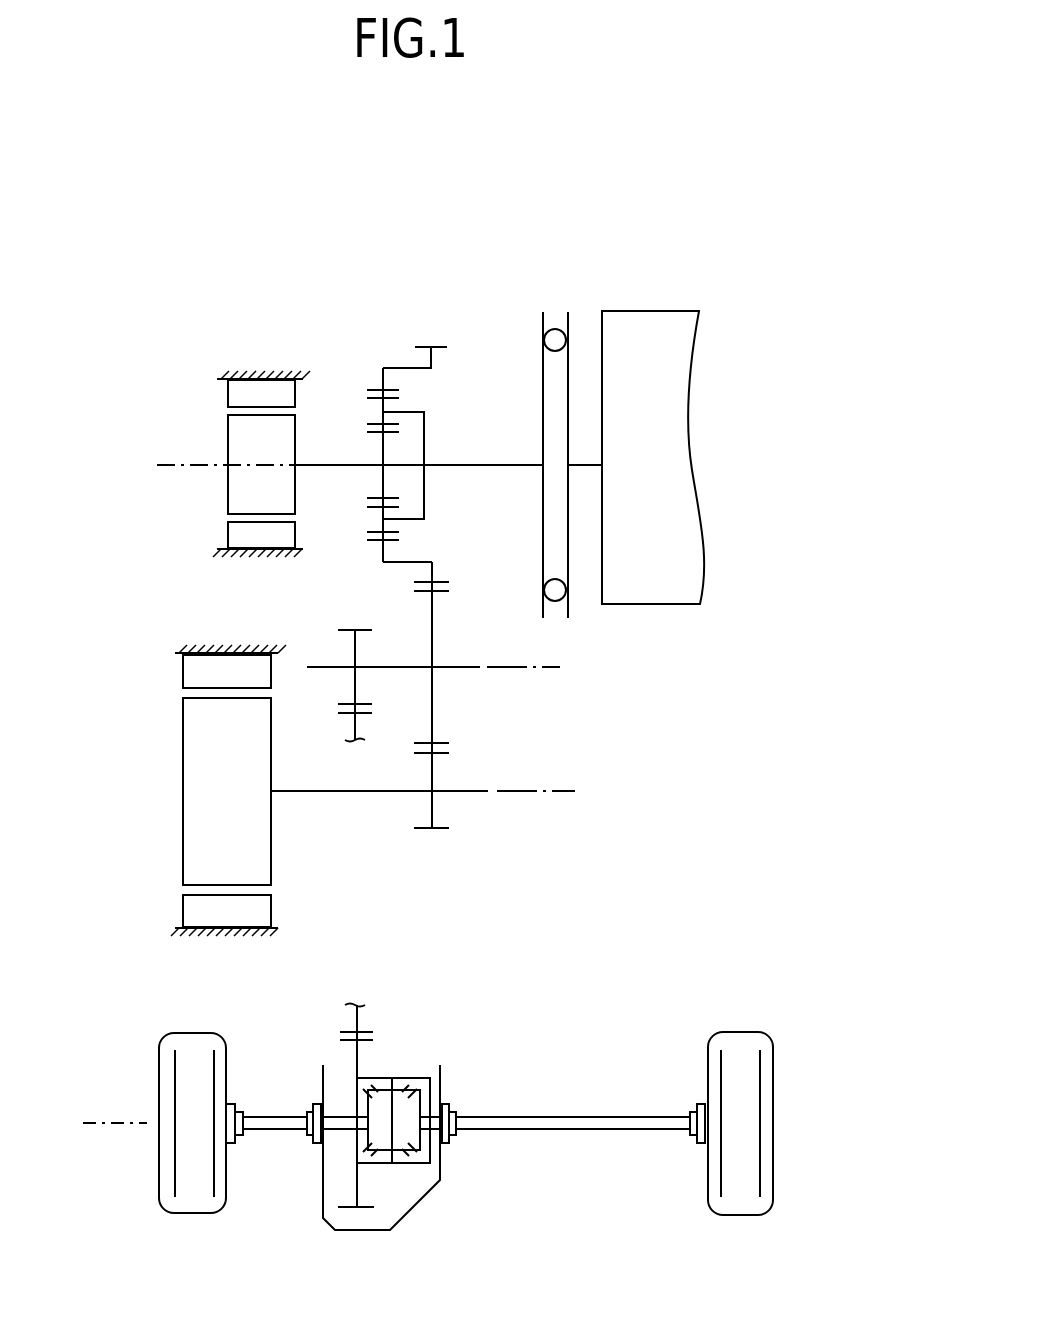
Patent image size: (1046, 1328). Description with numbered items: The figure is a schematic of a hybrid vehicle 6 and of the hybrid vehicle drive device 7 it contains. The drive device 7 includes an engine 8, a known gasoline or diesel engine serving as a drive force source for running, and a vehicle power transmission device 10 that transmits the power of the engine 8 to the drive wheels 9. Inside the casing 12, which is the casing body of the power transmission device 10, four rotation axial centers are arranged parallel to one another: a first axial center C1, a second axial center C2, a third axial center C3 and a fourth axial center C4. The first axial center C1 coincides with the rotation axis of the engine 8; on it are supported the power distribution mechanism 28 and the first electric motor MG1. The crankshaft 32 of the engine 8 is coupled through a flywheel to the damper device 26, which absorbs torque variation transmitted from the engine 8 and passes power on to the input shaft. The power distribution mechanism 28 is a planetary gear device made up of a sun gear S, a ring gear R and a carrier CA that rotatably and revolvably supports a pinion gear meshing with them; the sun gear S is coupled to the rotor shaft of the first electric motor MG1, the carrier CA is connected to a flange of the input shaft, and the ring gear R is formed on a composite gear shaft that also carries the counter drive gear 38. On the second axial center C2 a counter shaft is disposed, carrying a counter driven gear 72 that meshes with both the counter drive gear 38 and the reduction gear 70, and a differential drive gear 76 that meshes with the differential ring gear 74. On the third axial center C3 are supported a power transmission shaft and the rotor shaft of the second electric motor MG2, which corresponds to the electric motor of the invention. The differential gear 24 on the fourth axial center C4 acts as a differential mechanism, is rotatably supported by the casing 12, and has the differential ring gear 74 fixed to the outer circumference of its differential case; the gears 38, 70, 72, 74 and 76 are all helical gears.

The hybrid vehicle 6 is at (100, 114).
The hybrid vehicle drive device 7 is at (752, 282).
The engine 8 is at (663, 316).
The drive wheels 9 is at (185, 1040).
The vehicle power transmission device 10 is at (248, 282).
The casing 12 is at (250, 372).
The differential gear 24 is at (410, 1182).
The damper device 26 is at (560, 292).
The power distribution mechanism 28 is at (385, 352).
The crankshaft 32 is at (580, 462).
The counter drive gear 38 is at (437, 585).
The reduction gear 70 is at (421, 830).
The counter driven gear 72 is at (437, 594).
The differential ring gear 74 is at (345, 713).
The differential drive gear 76 is at (345, 704).
The first electric motor MG1 is at (203, 421).
The second electric motor MG2 is at (168, 728).
The ring gear R is at (375, 388).
The sun gear S is at (375, 432).
The carrier CA is at (410, 412).
The first axial center C1 is at (180, 465).
The second axial center C2 is at (555, 668).
The third axial center C3 is at (568, 792).
The fourth axial center C4 is at (95, 1120).